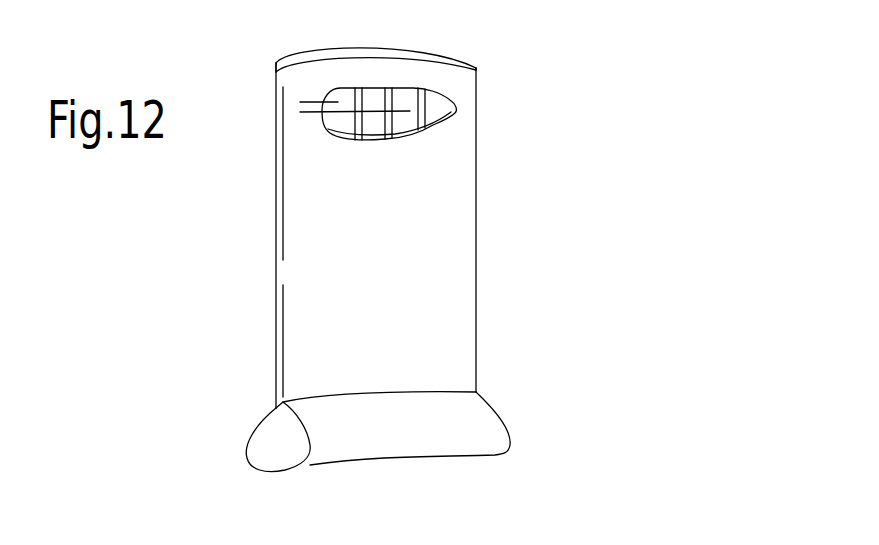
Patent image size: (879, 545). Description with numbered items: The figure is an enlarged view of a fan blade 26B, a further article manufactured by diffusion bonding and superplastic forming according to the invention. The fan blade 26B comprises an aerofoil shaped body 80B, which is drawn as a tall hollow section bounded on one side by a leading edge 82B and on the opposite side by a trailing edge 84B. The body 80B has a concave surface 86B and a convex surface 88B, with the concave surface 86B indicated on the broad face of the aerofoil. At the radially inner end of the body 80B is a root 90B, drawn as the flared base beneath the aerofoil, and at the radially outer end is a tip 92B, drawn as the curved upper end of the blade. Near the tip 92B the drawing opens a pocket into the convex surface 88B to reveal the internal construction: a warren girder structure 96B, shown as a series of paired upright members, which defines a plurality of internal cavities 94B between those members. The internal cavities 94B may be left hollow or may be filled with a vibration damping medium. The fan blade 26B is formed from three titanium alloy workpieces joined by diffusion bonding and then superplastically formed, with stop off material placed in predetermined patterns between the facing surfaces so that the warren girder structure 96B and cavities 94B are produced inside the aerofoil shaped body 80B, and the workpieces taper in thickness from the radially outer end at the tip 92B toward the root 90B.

The fan blade 26B is at (453, 163).
The aerofoil shaped body 80B is at (447, 233).
The leading edge 82B is at (276, 255).
The trailing edge 84B is at (477, 299).
The concave surface 86B is at (415, 358).
The convex surface 88B is at (381, 47).
The root 90B is at (473, 428).
The tip 92B is at (463, 60).
The internal cavities 94B is at (410, 112).
The warren girder structure 96B is at (422, 90).